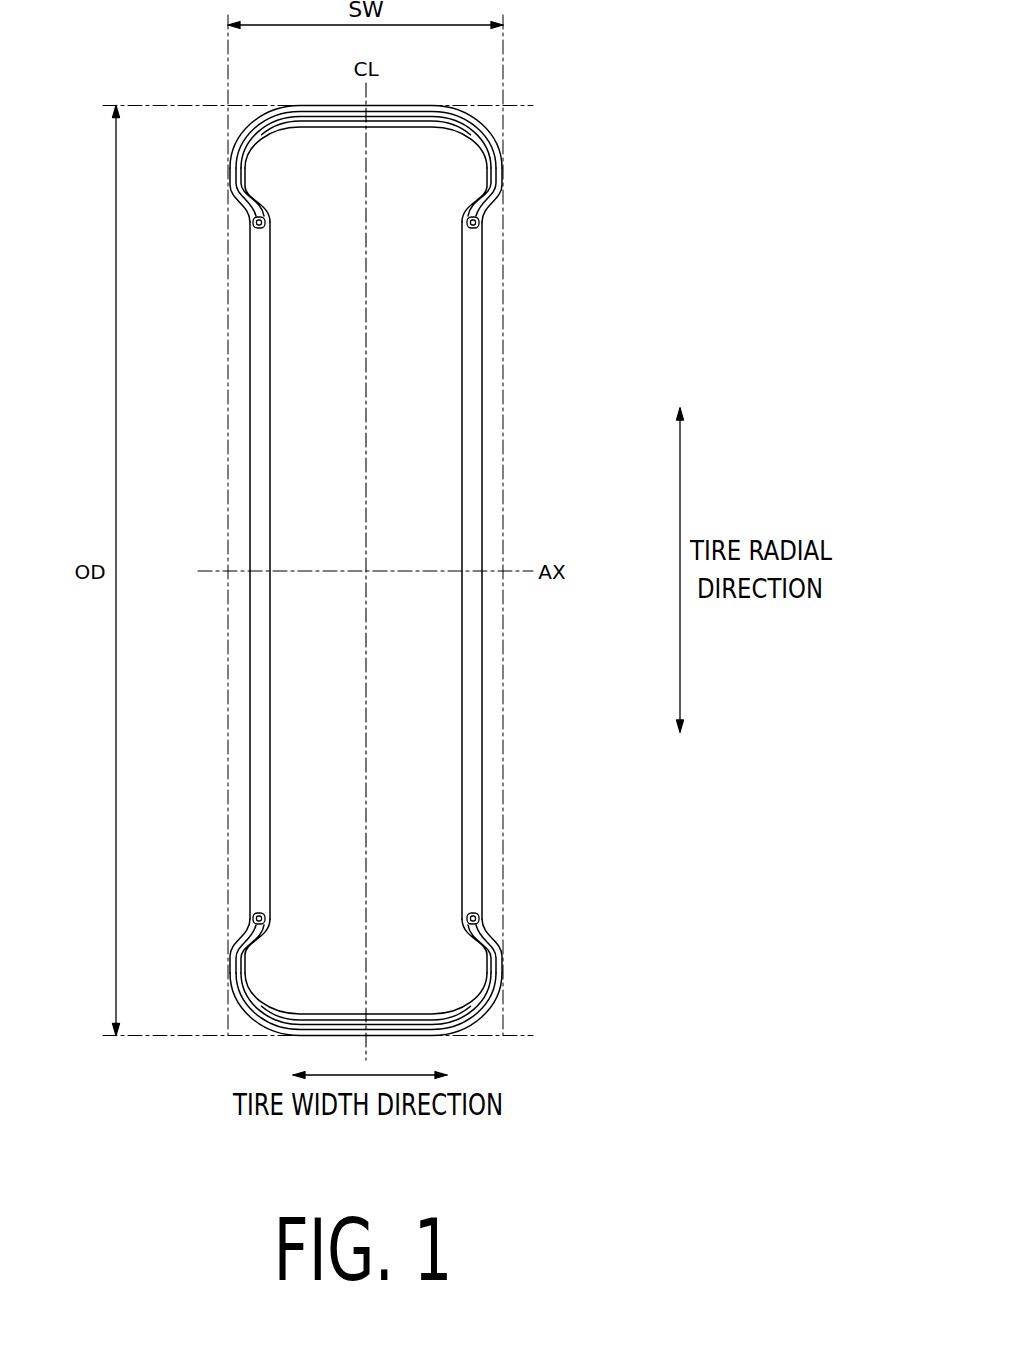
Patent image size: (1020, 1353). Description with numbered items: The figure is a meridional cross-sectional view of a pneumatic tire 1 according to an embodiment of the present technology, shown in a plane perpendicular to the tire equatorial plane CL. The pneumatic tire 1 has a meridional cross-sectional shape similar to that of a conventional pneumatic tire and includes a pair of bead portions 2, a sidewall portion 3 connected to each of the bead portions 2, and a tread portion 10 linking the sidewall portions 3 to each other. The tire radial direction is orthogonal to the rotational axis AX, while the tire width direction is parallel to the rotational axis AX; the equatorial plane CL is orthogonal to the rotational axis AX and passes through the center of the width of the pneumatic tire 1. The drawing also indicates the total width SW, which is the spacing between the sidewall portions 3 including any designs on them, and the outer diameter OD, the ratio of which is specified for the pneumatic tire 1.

The pneumatic tire 1 is at (614, 125).
The bead portion 2 is at (245, 215).
The sidewall portion 3 is at (231, 165).
The tread portion 10 is at (402, 104).